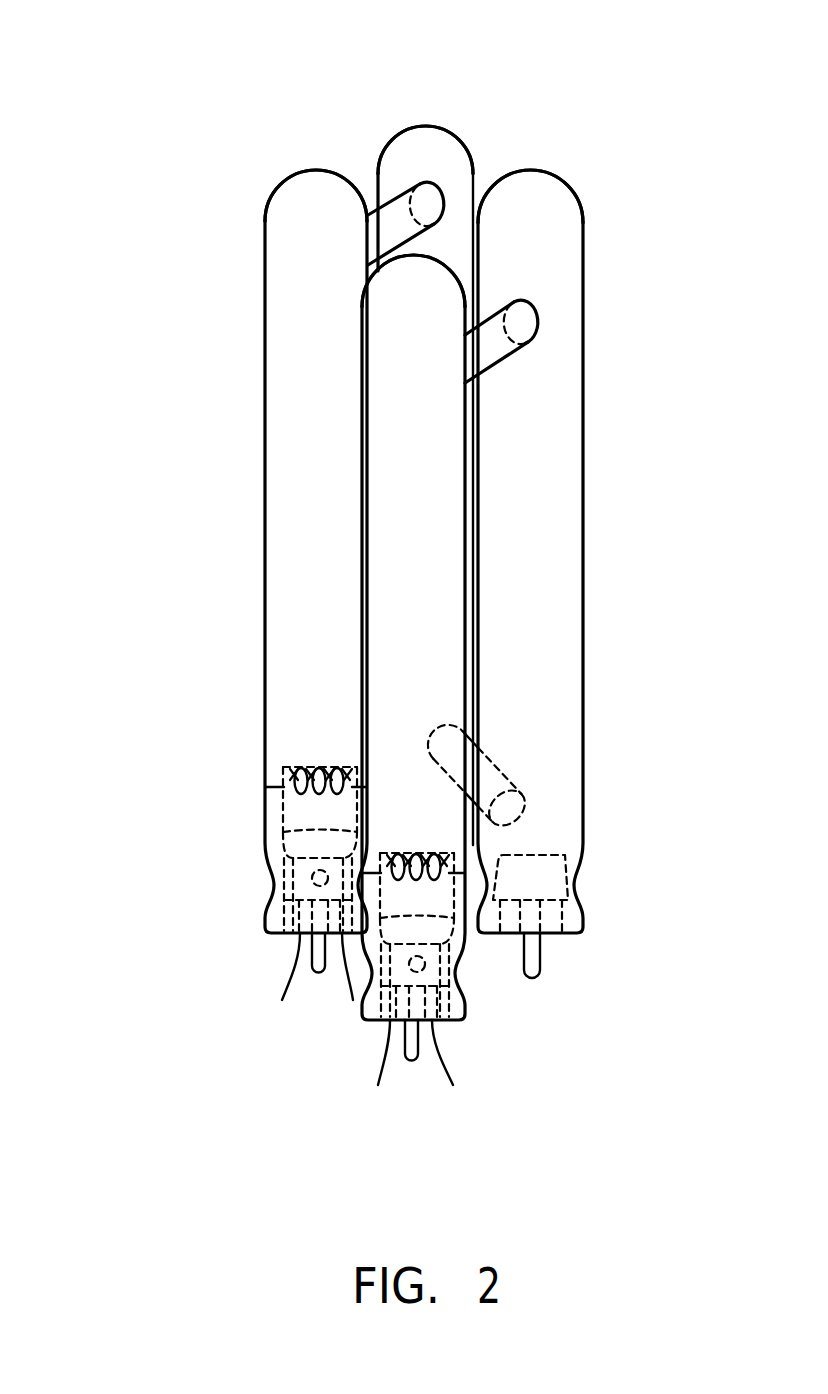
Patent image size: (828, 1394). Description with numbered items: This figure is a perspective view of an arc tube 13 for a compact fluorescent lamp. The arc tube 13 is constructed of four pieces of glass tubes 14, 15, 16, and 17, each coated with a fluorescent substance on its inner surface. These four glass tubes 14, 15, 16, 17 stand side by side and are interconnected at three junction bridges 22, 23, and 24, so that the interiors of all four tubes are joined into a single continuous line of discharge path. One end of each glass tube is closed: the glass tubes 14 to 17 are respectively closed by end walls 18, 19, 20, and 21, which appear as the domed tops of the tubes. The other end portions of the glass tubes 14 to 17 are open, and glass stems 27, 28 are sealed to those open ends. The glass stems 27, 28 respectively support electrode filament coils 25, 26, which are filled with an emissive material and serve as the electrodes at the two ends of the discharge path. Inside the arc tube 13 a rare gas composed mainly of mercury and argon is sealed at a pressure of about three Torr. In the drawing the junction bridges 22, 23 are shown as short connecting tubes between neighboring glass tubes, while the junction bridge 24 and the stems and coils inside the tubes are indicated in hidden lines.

The arc tube 13 is at (160, 126).
The glass tube 14 is at (277, 453).
The glass tube 15 is at (467, 140).
The glass tube 16 is at (573, 266).
The glass tube 17 is at (453, 575).
The end wall 18 is at (318, 168).
The end wall 19 is at (430, 123).
The end wall 20 is at (540, 168).
The end wall 21 is at (430, 257).
The junction bridge 22 is at (395, 217).
The junction bridge 23 is at (515, 357).
The junction bridge 24 is at (472, 777).
The electrode filament coil 25 is at (340, 768).
The electrode filament coil 26 is at (377, 848).
The glass stem 27 is at (287, 878).
The glass stem 28 is at (447, 1002).